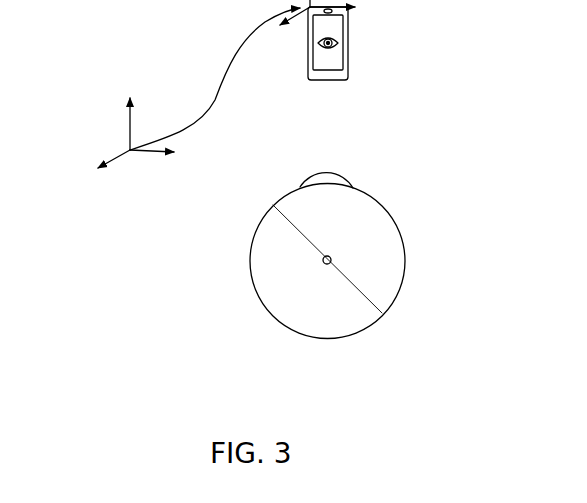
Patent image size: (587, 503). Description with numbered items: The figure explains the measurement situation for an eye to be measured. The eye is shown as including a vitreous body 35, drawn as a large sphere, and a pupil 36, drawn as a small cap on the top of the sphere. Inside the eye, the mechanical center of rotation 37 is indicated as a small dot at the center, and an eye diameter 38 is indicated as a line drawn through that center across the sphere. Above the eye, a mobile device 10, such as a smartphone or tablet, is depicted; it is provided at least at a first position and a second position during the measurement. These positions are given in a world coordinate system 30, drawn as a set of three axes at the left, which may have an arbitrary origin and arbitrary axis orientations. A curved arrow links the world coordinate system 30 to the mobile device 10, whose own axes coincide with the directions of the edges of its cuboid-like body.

The mobile device 10 is at (350, 76).
The world coordinate system 30 is at (130, 122).
The vitreous body 35 is at (280, 327).
The pupil 36 is at (358, 177).
The mechanical center of rotation 37 is at (340, 251).
The eye diameter 38 is at (372, 297).